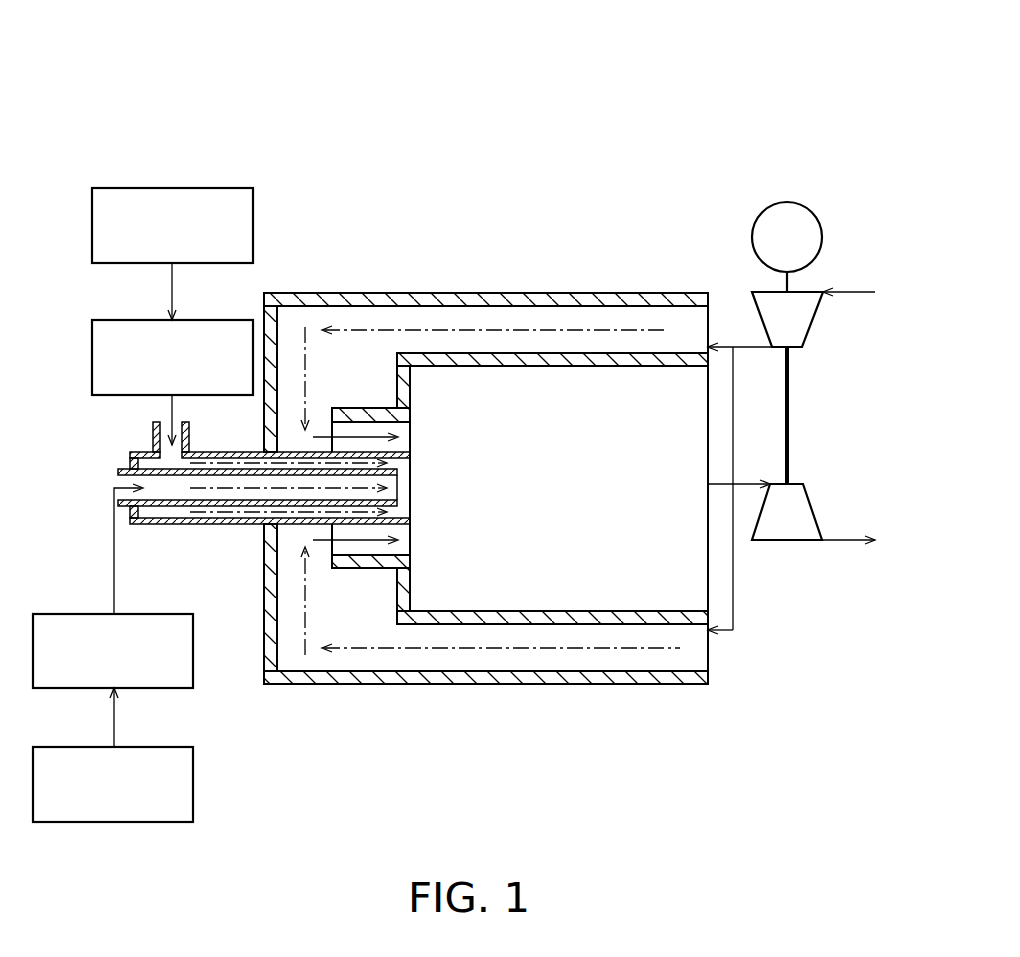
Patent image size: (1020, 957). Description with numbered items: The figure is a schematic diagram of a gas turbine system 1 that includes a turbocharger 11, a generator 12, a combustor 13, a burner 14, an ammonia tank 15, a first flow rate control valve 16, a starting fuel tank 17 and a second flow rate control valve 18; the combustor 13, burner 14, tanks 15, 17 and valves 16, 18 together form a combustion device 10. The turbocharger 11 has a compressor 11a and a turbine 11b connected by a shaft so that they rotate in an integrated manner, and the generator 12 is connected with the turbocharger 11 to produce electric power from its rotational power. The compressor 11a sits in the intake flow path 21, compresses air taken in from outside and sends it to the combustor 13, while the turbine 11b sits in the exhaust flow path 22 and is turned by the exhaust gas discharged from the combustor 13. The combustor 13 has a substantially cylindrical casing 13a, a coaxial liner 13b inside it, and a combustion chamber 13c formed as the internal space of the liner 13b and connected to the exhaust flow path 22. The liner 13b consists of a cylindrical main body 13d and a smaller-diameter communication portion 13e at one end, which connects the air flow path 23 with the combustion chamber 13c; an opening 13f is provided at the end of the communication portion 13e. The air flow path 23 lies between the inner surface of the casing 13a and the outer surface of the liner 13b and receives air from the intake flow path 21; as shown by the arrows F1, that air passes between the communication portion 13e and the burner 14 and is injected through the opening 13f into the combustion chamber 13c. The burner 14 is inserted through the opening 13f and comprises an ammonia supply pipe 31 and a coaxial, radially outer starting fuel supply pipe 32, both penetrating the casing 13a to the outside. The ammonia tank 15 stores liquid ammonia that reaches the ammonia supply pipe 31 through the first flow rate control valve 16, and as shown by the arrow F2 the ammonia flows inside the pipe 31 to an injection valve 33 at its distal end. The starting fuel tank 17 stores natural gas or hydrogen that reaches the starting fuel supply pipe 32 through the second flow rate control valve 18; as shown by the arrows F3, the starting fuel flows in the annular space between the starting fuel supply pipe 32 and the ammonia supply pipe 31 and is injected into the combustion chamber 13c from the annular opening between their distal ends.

The gas turbine system 1 is at (86, 70).
The combustion device 10 is at (148, 132).
The turbocharger 11 is at (824, 406).
The compressor 11a is at (810, 322).
The turbine 11b is at (810, 510).
The generator 12 is at (790, 203).
The combustor 13 is at (486, 490).
The casing 13a is at (490, 685).
The liner 13b is at (430, 625).
The combustion chamber 13c is at (668, 590).
The main body 13d is at (608, 625).
The communication portion 13e is at (370, 568).
The opening 13f is at (345, 551).
The burner 14 is at (296, 522).
The ammonia tank 15 is at (150, 746).
The first flow rate control valve 16 is at (137, 613).
The starting fuel tank 17 is at (207, 187).
The second flow rate control valve 18 is at (213, 319).
The intake flow path 21 is at (857, 292).
The exhaust flow path 22 is at (758, 482).
The air flow path 23 is at (333, 322).
The ammonia supply pipe 31 is at (243, 526).
The starting fuel supply pipe 32 is at (197, 526).
The injection valve 33 is at (412, 487).
The air flow arrows F1 is at (355, 437).
The ammonia flow arrow F2 is at (242, 512).
The starting fuel flow arrows F3 is at (200, 513).